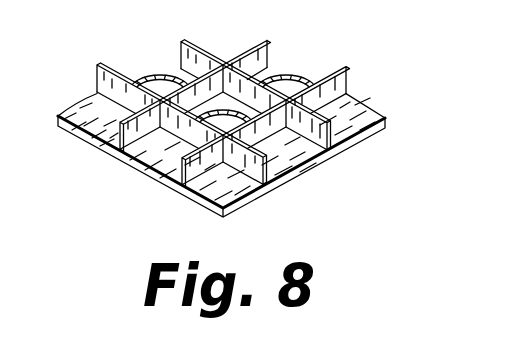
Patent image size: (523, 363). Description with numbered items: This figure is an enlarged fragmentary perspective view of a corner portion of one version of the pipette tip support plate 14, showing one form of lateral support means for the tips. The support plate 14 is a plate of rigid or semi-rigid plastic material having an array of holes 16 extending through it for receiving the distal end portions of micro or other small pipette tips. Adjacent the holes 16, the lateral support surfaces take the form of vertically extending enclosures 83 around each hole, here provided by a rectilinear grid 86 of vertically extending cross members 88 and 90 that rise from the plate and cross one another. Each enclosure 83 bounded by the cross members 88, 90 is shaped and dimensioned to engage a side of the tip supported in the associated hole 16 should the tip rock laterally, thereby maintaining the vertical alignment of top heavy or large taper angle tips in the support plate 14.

The support plate 14 is at (366, 117).
The holes 16 is at (158, 78).
The enclosures 83 is at (208, 66).
The rectilinear grid 86 is at (268, 41).
The cross members 88 is at (348, 66).
The cross members 90 is at (322, 133).